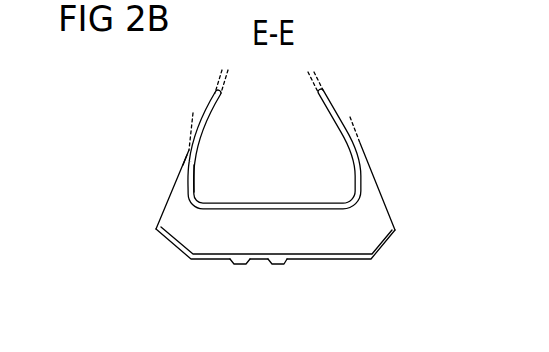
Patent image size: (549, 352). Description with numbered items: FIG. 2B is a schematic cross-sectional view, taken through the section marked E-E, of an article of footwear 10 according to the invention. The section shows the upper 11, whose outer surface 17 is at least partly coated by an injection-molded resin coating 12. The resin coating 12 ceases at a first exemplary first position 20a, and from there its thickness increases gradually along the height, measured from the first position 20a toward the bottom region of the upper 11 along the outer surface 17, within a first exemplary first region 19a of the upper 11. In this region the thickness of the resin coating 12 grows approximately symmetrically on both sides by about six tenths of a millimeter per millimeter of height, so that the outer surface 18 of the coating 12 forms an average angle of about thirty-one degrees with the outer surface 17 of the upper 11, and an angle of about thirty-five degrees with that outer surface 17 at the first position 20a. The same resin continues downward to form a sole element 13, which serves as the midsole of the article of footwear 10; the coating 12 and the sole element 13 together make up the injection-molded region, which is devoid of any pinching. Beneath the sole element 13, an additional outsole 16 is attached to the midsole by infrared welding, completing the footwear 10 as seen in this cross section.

The article of footwear 10 is at (347, 91).
The upper 11 is at (320, 194).
The resin coating 12 is at (194, 169).
The sole element 13 is at (210, 243).
The outsole 16 is at (277, 264).
The outer surface of the upper 17 is at (200, 185).
The outer surface of the resin coating 18 is at (178, 185).
The first region 19a is at (171, 176).
The first position 20a is at (188, 149).